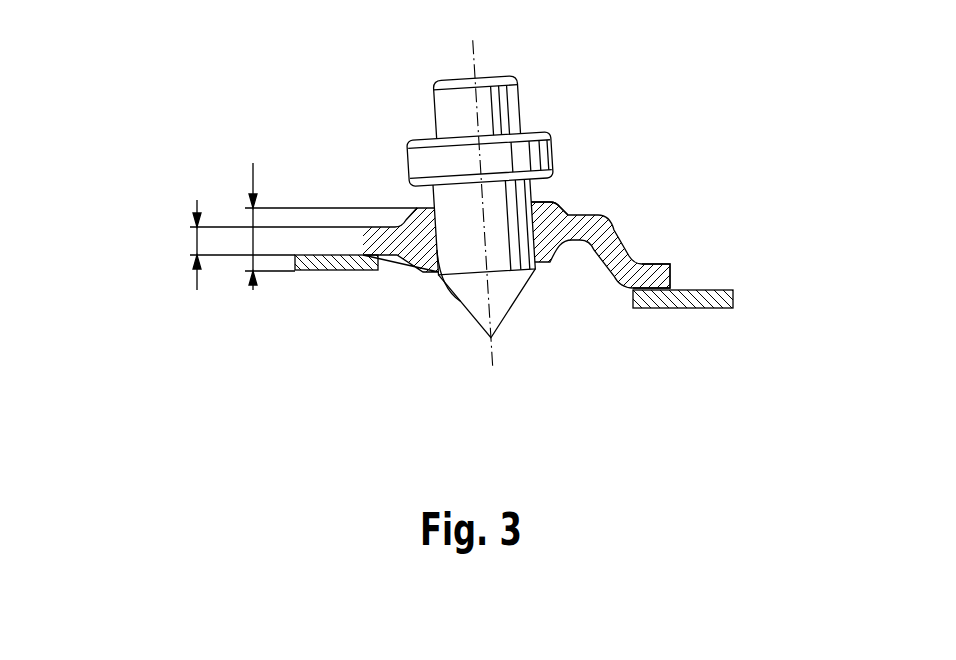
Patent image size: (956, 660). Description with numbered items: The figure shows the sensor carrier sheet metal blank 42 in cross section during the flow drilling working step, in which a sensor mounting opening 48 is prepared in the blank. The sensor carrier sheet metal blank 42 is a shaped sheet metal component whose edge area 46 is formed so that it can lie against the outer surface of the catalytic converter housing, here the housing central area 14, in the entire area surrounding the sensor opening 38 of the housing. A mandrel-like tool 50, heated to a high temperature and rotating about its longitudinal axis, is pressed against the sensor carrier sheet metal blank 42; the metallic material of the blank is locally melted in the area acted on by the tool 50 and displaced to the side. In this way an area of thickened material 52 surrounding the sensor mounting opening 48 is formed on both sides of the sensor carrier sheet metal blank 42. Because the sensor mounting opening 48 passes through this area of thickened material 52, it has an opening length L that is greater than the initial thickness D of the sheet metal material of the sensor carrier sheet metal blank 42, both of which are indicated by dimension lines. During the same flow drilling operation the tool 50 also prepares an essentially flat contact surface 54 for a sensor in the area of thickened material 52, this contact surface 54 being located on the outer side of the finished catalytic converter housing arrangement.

The housing central area 14 is at (690, 300).
The sensor opening 38 is at (382, 257).
The sensor carrier sheet metal blank 42 is at (612, 247).
The edge area 46 is at (672, 275).
The sensor mounting opening 48 is at (521, 224).
The tool 50 is at (517, 152).
The area of thickened material 52 is at (550, 258).
The contact surface 54 is at (541, 191).
The initial thickness D is at (252, 242).
The opening length L is at (195, 242).